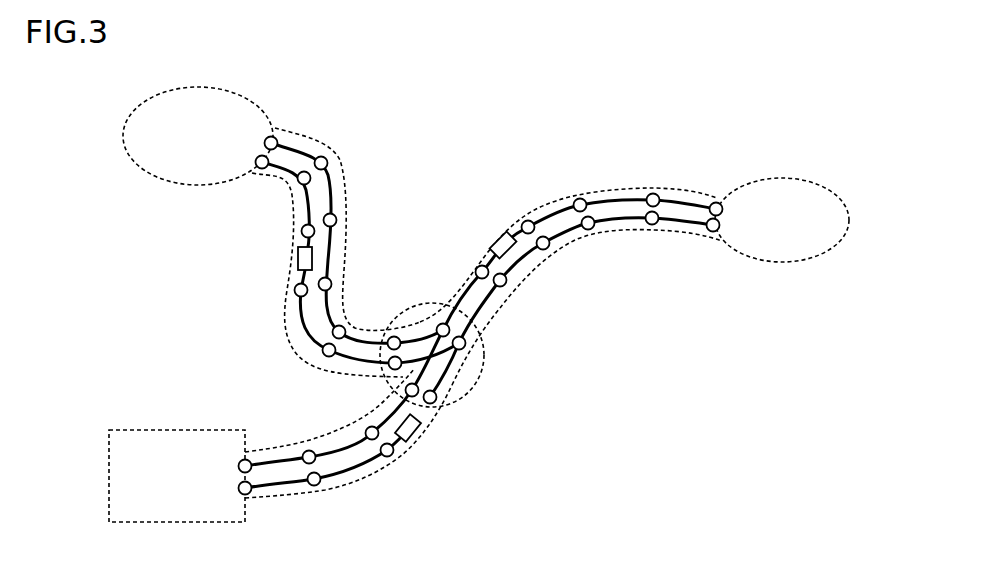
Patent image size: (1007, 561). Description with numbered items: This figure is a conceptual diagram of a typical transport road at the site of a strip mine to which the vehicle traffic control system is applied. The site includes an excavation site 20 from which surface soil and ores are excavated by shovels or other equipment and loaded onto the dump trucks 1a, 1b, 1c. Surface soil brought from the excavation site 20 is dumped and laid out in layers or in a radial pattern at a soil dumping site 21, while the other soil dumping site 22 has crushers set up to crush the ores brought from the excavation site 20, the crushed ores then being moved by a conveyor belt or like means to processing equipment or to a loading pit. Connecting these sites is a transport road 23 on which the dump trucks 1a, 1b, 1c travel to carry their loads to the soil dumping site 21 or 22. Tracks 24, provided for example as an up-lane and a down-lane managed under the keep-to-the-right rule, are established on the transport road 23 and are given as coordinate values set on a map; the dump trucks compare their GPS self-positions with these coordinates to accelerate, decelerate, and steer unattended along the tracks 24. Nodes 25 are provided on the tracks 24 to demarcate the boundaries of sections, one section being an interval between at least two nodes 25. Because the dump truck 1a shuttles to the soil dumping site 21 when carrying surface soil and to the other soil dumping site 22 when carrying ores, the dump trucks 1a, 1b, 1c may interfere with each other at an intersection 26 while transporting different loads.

The excavation site 20 is at (805, 180).
The soil dumping site 21 is at (250, 98).
The other soil dumping site 22 is at (160, 430).
The transport road 23 is at (612, 192).
The tracks 24 is at (352, 468).
The nodes 25 is at (317, 480).
The intersection 26 is at (468, 395).
The dump truck 1a is at (415, 440).
The dump truck 1b is at (298, 252).
The dump truck 1c is at (497, 242).